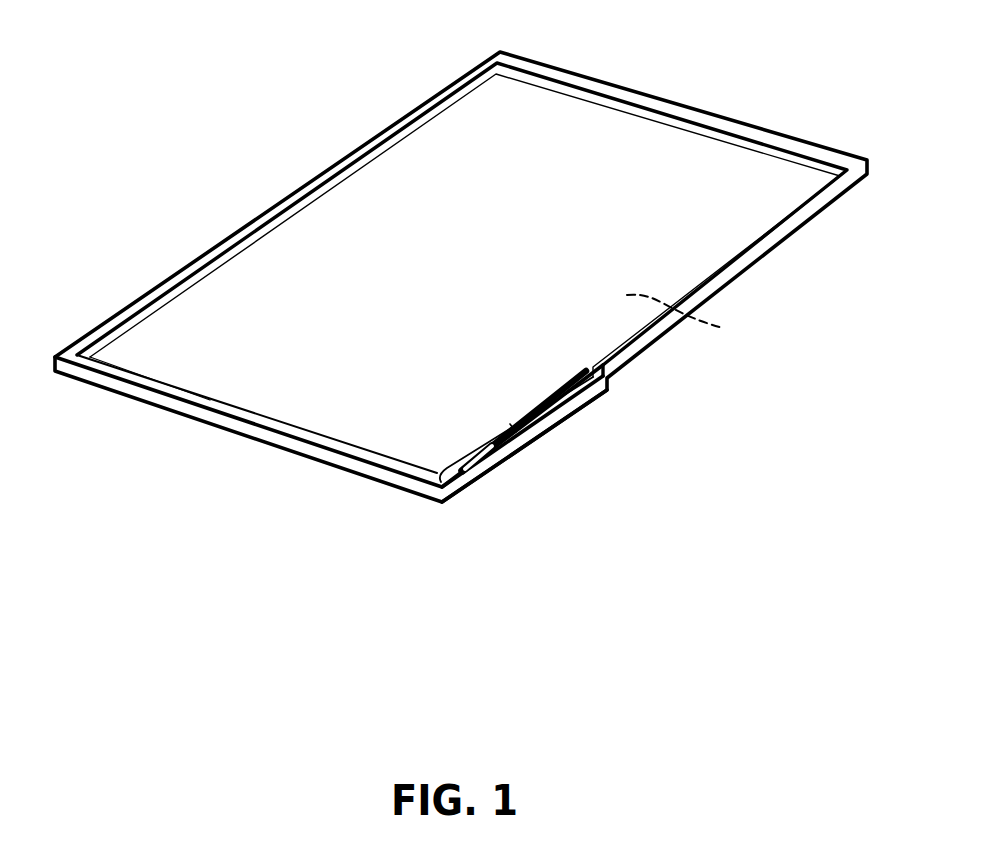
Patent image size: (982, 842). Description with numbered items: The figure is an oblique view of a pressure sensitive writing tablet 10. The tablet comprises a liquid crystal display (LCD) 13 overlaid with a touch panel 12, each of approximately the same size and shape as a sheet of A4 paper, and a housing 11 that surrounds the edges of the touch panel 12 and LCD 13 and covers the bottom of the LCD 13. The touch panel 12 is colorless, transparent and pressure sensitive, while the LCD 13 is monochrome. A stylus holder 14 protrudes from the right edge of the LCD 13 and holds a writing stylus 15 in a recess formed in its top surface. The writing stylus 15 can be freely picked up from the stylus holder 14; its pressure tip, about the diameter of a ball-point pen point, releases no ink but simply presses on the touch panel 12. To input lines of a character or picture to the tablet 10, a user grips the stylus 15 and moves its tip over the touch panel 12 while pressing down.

The pressure sensitive writing tablet 10 is at (616, 46).
The housing 11 is at (672, 110).
The touch panel 12 is at (358, 190).
The liquid crystal display (LCD) 13 is at (690, 316).
The stylus holder 14 is at (584, 411).
The writing stylus 15 is at (527, 442).